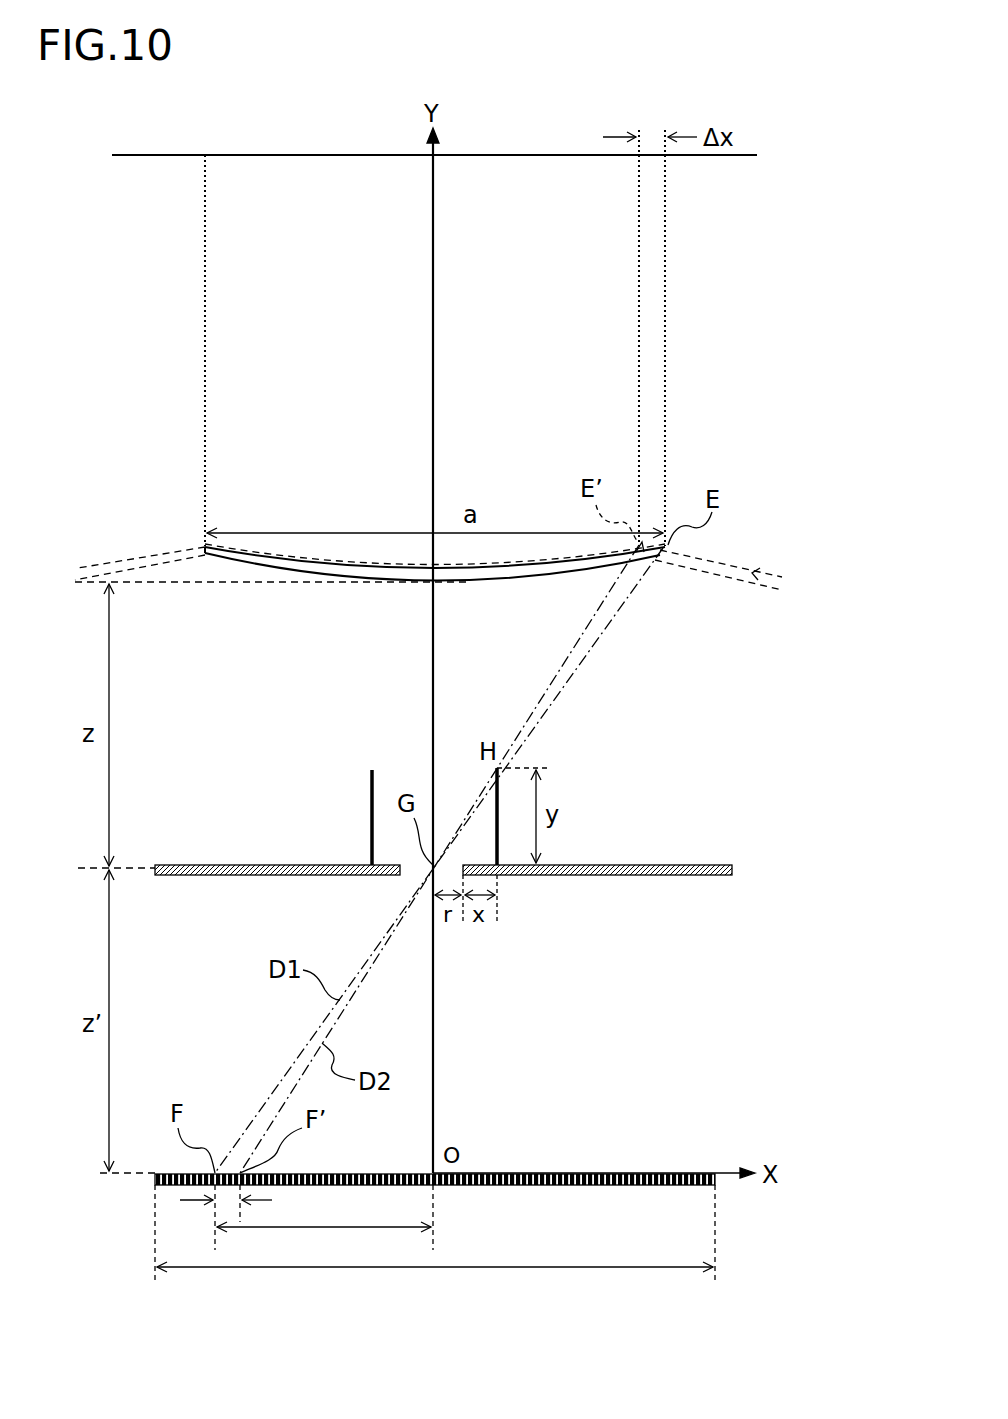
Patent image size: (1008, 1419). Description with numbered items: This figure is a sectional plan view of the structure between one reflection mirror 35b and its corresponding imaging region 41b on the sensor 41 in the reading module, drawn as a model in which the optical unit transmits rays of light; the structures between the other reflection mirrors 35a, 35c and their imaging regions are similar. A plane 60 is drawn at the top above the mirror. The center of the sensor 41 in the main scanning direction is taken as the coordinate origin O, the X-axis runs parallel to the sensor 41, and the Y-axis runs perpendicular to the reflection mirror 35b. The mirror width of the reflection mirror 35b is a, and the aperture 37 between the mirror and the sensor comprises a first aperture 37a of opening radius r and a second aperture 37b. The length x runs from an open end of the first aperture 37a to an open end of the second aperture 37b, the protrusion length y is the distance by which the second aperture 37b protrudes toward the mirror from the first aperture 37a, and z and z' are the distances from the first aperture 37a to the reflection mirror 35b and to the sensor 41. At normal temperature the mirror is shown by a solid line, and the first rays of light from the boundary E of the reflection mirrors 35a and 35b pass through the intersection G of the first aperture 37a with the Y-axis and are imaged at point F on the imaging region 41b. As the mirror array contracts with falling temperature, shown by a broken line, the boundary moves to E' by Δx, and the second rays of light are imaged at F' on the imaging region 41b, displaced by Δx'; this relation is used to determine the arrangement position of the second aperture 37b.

The object plane 60 is at (160, 155).
The reflection mirror 35a is at (762, 586).
The reflection mirror 35b is at (540, 580).
The reflection mirror 35c is at (108, 566).
The aperture 37 is at (443, 813).
The first aperture 37a is at (400, 865).
The second aperture 37b is at (372, 770).
The sensor 41 is at (607, 1174).
The imaging region 41b is at (435, 1244).